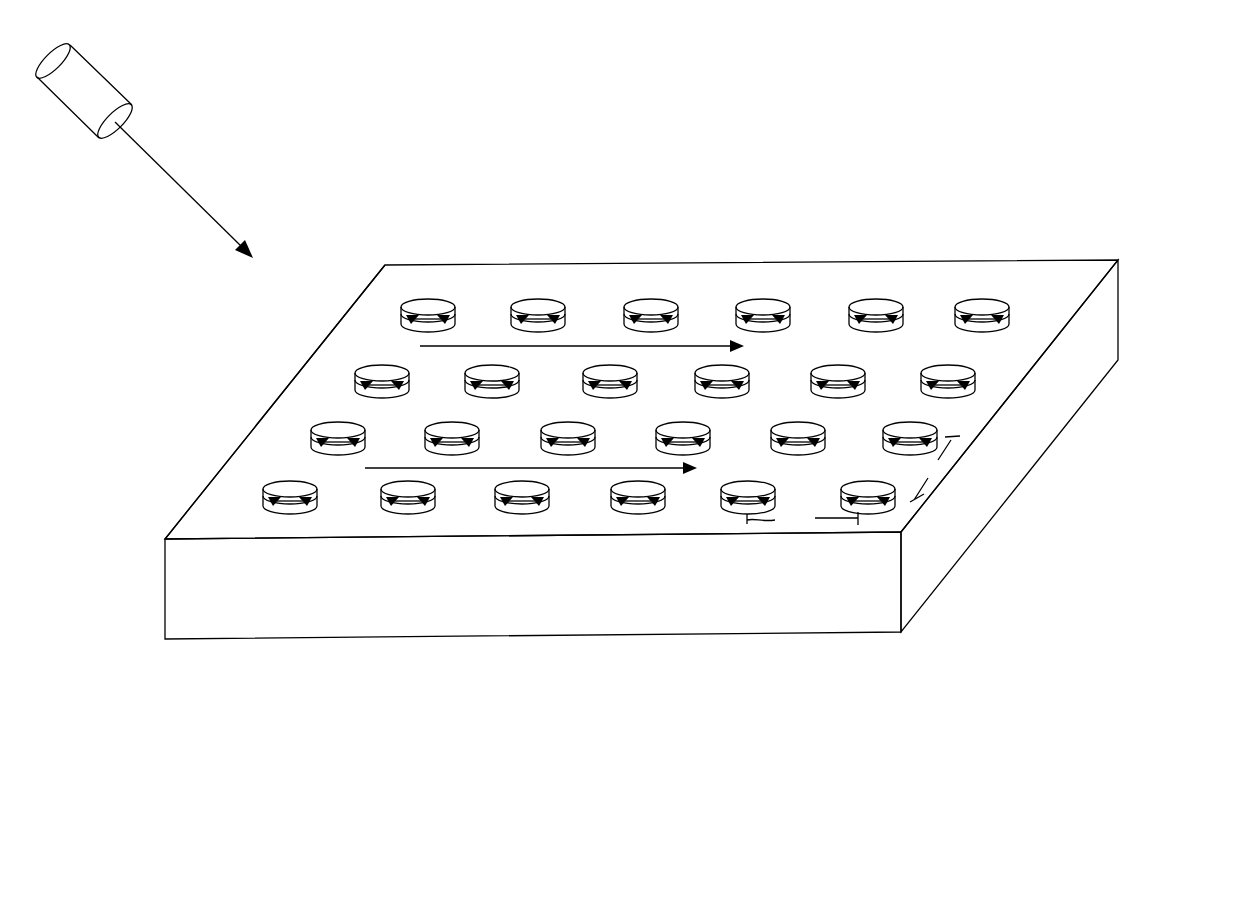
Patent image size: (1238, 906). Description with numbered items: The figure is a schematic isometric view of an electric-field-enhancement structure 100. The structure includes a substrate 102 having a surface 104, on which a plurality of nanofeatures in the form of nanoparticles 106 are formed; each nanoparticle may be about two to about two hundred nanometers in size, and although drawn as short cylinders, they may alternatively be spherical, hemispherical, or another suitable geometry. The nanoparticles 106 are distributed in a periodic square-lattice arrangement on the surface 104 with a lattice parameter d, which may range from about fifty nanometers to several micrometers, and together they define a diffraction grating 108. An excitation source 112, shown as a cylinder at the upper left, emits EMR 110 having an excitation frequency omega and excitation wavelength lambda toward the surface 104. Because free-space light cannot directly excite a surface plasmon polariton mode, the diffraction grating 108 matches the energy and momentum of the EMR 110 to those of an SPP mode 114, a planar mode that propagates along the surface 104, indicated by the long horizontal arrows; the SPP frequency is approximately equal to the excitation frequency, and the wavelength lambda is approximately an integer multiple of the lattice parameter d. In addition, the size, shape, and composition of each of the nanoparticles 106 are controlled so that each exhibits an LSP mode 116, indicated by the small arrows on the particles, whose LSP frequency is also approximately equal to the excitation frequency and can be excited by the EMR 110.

The electric-field-enhancement structure 100 is at (1118, 136).
The substrate 102 is at (1103, 310).
The surface 104 is at (1062, 272).
The nanoparticles 106 is at (990, 298).
The diffraction grating 108 is at (280, 423).
The EMR 110 is at (158, 157).
The excitation source 112 is at (87, 82).
The SPP mode 114 is at (452, 349).
The LSP mode 116 is at (455, 330).